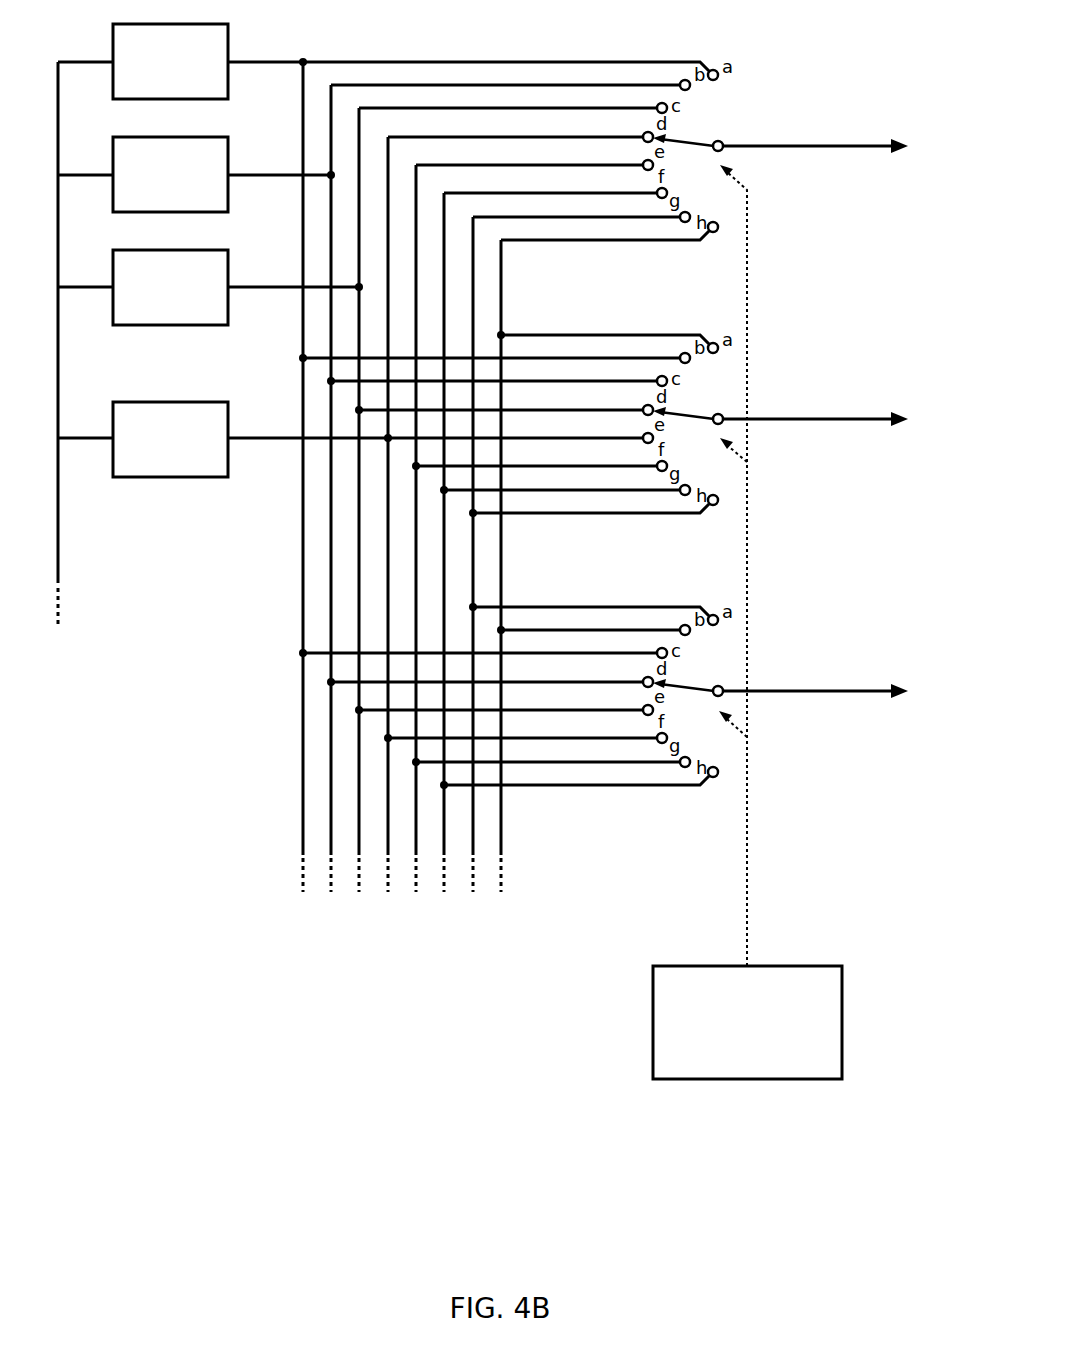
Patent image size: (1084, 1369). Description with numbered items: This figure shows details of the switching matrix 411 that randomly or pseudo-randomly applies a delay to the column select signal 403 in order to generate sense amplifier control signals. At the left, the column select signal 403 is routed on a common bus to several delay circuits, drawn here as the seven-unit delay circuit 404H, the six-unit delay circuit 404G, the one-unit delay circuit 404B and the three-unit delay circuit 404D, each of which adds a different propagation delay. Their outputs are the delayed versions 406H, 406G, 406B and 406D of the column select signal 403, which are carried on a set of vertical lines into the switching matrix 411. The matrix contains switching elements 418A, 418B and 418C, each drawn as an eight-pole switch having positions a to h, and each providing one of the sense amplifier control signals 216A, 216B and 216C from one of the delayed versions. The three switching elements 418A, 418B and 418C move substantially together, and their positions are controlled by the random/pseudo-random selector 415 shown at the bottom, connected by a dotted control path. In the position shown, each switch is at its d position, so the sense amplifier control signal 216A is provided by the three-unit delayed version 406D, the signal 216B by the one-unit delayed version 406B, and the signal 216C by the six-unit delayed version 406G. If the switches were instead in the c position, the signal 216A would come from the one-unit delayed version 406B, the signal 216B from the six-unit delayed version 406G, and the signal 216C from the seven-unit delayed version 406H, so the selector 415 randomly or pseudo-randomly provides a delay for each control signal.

The column select signal 403 is at (58, 552).
The delay circuit 404H is at (155, 24).
The delay circuit 404G is at (155, 137).
The delay circuit 404B is at (155, 250).
The delay circuit 404D is at (155, 402).
The delayed version of the column select signal 406H is at (236, 60).
The delayed version of the column select signal 406G is at (236, 173).
The delayed version of the column select signal 406B is at (236, 285).
The delayed version of the column select signal 406D is at (236, 436).
The switching element 418A is at (780, 90).
The switching element 418B is at (780, 363).
The switching element 418C is at (780, 635).
The sense amplifier control signal 216A is at (832, 146).
The sense amplifier control signal 216B is at (832, 419).
The sense amplifier control signal 216C is at (832, 691).
The switching matrix 411 is at (893, 850).
The random/pseudo-random selector 415 is at (843, 1024).